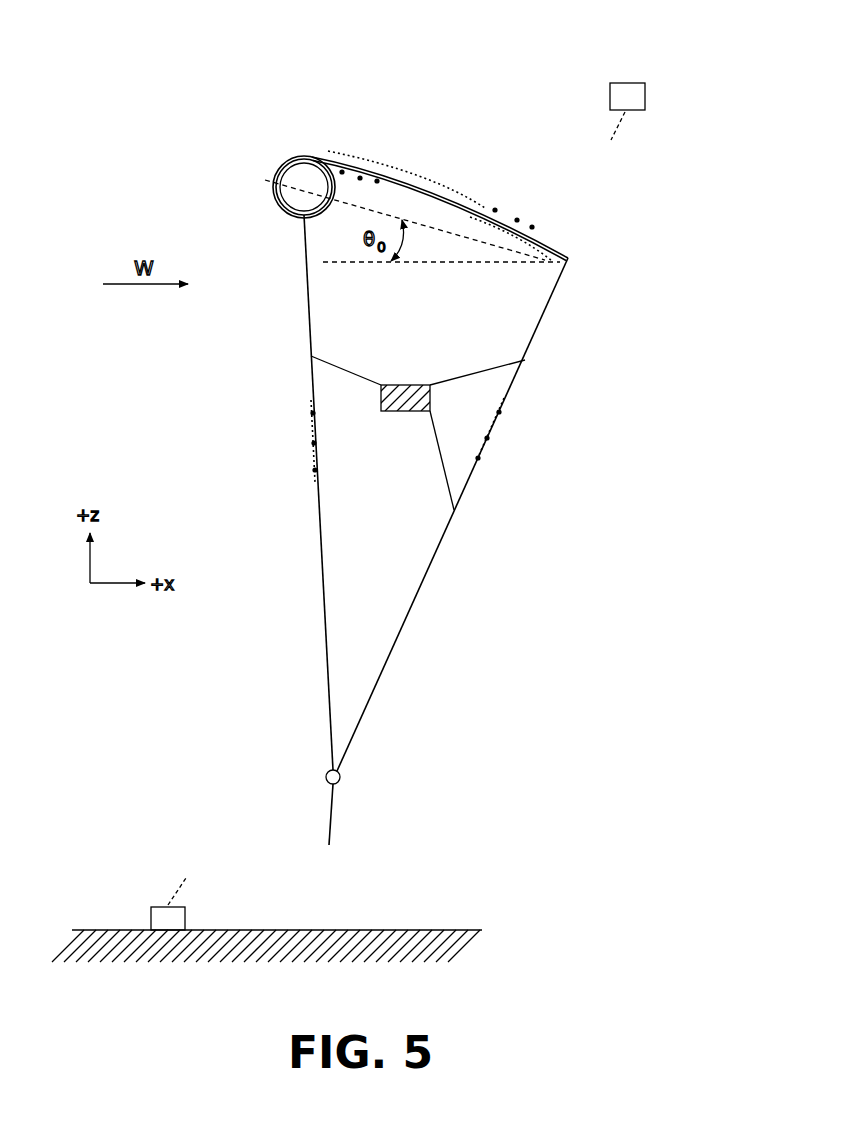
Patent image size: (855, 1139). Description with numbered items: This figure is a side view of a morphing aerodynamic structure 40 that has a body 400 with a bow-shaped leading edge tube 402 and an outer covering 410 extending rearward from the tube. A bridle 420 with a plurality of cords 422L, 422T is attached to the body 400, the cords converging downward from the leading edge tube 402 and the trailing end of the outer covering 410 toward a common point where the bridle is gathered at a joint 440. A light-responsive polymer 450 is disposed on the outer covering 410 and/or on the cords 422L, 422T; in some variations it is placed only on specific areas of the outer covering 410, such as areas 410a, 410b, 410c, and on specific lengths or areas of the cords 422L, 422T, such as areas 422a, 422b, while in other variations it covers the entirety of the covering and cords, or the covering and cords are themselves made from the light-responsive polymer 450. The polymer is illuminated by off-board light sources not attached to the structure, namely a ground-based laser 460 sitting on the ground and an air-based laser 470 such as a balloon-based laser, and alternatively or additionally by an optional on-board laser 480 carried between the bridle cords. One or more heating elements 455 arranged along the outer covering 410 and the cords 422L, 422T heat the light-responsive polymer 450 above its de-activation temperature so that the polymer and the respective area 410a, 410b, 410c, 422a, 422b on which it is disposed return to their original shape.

The morphing aerodynamic structure 40 is at (185, 112).
The body 400 is at (423, 210).
The bow-shaped leading edge tube 402 is at (277, 184).
The outer covering 410 is at (455, 193).
The area of outer covering 410a is at (298, 150).
The area of outer covering 410b is at (572, 254).
The area of outer covering 410c is at (543, 264).
The bridle 420 is at (370, 493).
The area of cord 422a is at (308, 486).
The area of cord 422b is at (478, 484).
The cord 422L is at (274, 492).
The cord 422T is at (452, 514).
The tether anchor joint 440 is at (333, 820).
The light-responsive polymer 450 is at (352, 158).
The heating element 455 is at (518, 220).
The ground-based laser 460 is at (158, 903).
The air-based laser 470 is at (630, 82).
The on-board laser 480 is at (400, 412).